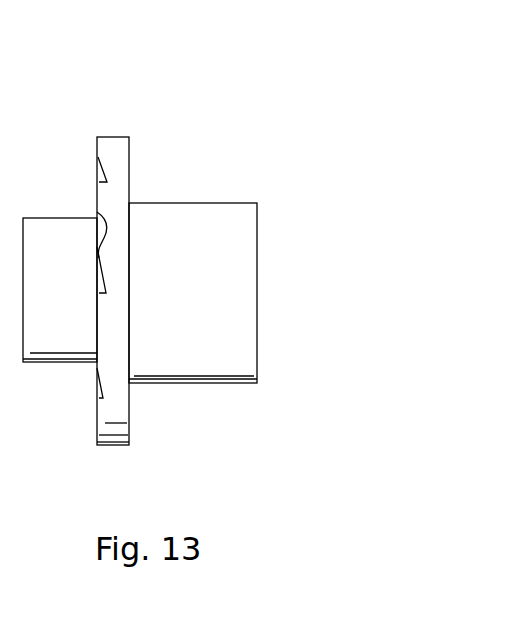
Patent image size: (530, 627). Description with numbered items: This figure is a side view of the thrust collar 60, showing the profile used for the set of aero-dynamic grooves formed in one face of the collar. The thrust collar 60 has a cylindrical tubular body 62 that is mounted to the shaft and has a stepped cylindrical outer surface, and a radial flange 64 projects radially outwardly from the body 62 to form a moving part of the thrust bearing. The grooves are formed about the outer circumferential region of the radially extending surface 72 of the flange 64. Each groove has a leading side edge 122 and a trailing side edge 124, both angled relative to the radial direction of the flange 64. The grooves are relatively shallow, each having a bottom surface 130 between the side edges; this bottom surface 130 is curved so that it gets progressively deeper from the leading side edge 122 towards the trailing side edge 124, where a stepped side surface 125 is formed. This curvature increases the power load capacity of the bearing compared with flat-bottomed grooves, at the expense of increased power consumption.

The thrust collar 60 is at (232, 159).
The cylindrical tubular body 62 is at (228, 208).
The radial flange 64 is at (118, 137).
The radially extending surface 72 is at (97, 427).
The leading side edge 122 is at (97, 212).
The trailing side edge 124 is at (103, 292).
The stepped side surface 125 is at (101, 400).
The bottom surface 130 is at (129, 268).